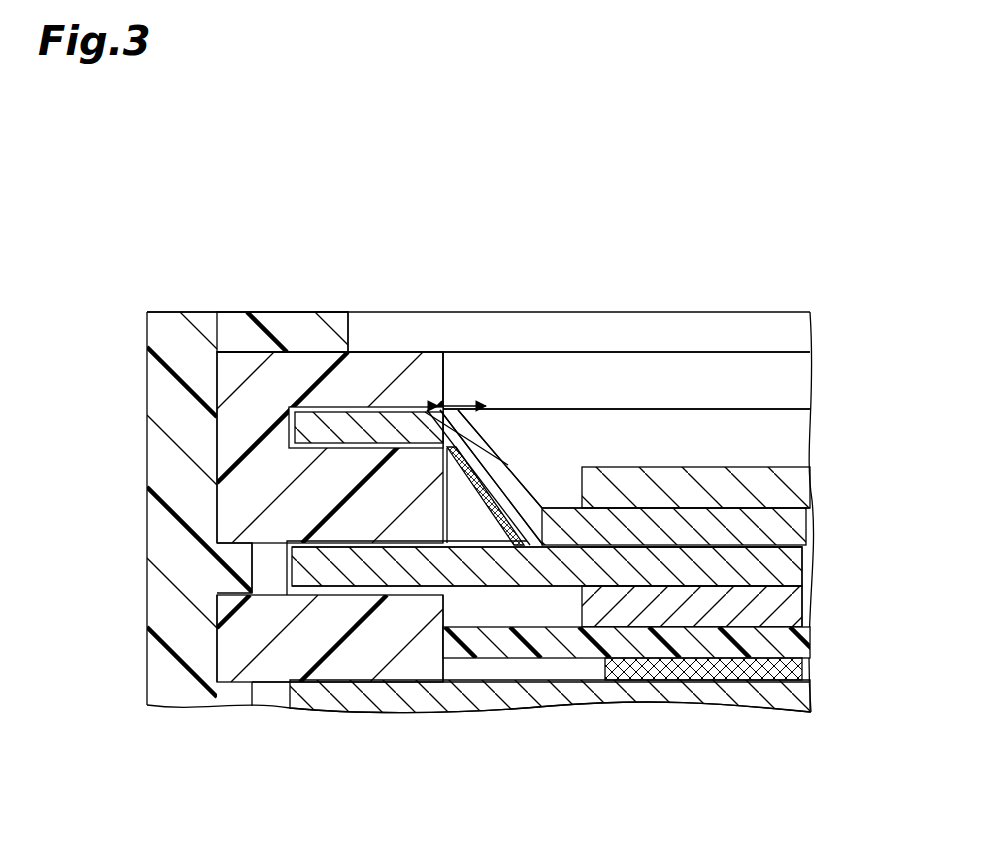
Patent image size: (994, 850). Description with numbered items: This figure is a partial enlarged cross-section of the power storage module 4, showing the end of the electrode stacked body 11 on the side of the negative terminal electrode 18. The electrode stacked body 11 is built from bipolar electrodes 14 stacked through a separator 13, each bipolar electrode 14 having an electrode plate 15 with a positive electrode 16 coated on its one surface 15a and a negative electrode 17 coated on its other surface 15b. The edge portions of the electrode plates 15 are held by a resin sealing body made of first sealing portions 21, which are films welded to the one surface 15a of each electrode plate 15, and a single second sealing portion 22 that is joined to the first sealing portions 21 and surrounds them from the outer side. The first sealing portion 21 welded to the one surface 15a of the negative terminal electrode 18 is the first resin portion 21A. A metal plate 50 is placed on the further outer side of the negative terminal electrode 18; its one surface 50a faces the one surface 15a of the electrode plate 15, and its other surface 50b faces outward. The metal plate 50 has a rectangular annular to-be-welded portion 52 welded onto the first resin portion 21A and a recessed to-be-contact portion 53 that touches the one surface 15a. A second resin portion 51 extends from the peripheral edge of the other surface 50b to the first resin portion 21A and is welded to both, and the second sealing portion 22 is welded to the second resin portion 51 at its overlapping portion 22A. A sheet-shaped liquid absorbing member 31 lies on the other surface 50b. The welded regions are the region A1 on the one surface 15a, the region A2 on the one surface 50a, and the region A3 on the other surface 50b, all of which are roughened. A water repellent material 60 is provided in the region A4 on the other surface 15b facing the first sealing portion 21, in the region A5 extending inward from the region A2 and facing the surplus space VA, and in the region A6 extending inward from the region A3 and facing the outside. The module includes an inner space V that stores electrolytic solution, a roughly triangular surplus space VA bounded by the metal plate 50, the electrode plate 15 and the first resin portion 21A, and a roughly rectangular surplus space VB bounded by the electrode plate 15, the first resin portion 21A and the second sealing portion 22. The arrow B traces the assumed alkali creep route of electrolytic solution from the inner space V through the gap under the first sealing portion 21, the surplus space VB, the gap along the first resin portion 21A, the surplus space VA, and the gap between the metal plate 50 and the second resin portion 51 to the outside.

The power storage module 4 is at (697, 200).
The electrode stacked body 11 is at (555, 738).
The separator 13 is at (782, 647).
The bipolar electrode 14 is at (322, 707).
The electrode plate 15 is at (762, 570).
The one surface 15a is at (288, 543).
The other surface 15b is at (288, 596).
The positive electrode 16 is at (735, 692).
The negative electrode 17 is at (763, 603).
The negative terminal electrode 18 is at (879, 545).
The first sealing portion 21 is at (277, 667).
The first resin portion 21A is at (233, 495).
The second sealing portion 22 is at (163, 332).
The overlapping portion 22A is at (290, 330).
The liquid absorbing member 31 is at (790, 483).
The metal plate 50 is at (807, 527).
The one surface 50a is at (805, 548).
The other surface 50b is at (765, 505).
The second resin portion 51 is at (233, 405).
The to-be-welded portion 52 is at (320, 425).
The to-be-contact portion 53 is at (697, 527).
The water repellent material 60 is at (460, 410).
The region A1 is at (360, 543).
The region A2 is at (395, 410).
The region A3 is at (417, 410).
The region A4 is at (397, 597).
The region A5 is at (480, 548).
The region A6 is at (467, 403).
The arrow B is at (362, 595).
The inner space V is at (515, 613).
The surplus space VA is at (472, 508).
The surplus space VB is at (258, 568).